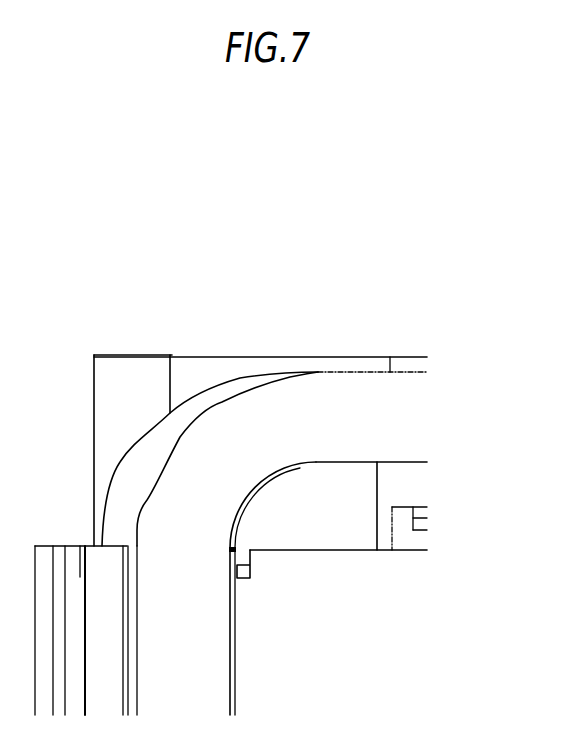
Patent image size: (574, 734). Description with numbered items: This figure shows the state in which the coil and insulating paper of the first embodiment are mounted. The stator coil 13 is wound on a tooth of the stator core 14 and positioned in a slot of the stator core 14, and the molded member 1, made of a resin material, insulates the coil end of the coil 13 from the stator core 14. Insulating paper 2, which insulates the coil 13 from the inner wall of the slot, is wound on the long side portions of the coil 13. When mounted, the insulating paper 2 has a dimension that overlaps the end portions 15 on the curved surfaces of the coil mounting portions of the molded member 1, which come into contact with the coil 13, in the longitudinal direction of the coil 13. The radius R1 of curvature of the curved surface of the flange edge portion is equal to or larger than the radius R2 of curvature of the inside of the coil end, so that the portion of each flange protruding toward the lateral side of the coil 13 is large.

The molded member 1 is at (358, 490).
The insulating paper 2 is at (230, 600).
The stator coil 13 is at (333, 385).
The stator core 14 is at (330, 650).
The end portions 15 is at (240, 565).
The radius of curvature of a curved surface of an edge portion of each flange R1 is at (257, 490).
The radius of curvature of the inside of the coil end R2 is at (252, 493).